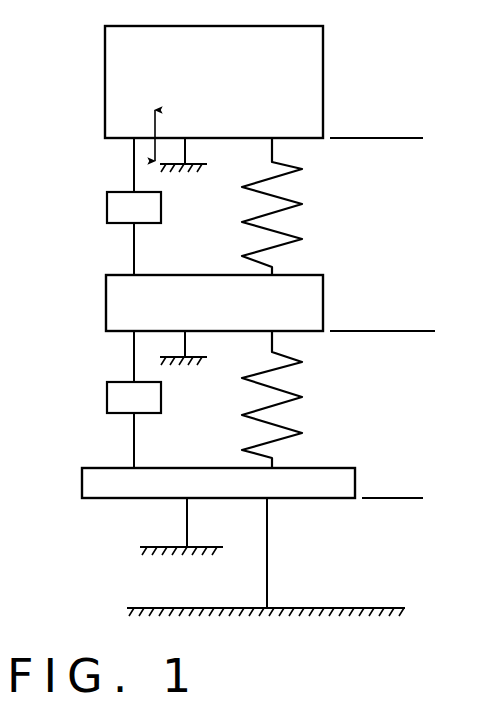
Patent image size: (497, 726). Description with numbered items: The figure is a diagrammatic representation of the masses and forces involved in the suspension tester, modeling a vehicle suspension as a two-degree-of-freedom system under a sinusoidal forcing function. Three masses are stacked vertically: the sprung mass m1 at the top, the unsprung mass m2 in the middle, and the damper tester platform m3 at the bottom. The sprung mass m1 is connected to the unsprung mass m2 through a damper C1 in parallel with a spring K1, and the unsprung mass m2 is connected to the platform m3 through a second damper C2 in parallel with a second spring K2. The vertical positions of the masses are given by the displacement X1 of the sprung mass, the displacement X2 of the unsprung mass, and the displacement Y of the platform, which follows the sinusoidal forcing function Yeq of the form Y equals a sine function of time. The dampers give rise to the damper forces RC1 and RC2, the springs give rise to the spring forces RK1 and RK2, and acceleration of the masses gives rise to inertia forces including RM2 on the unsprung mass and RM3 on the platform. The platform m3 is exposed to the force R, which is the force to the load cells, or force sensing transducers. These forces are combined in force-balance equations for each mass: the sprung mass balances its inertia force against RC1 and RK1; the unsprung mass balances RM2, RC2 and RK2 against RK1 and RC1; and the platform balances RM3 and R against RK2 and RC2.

The sprung mass m1 is at (214, 82).
The unsprung mass m2 is at (214, 303).
The damper tester platform m3 is at (218, 484).
The damper C1 is at (134, 206).
The damper C2 is at (134, 399).
The spring K1 is at (257, 206).
The spring K2 is at (272, 399).
The displacement of sprung mass X1 is at (382, 138).
The displacement of unsprung mass X2 is at (382, 331).
The displacement of platform Y is at (384, 441).
The damper force RC1 is at (83, 173).
The damper force RC2 is at (83, 361).
The spring force RK1 is at (323, 170).
The spring force RK2 is at (323, 370).
The inertia force of unsprung mass RM2 is at (163, 350).
The inertia force of platform RM3 is at (137, 508).
The force to load cells R is at (292, 513).
The sinusoidal forcing function Yeq is at (358, 590).